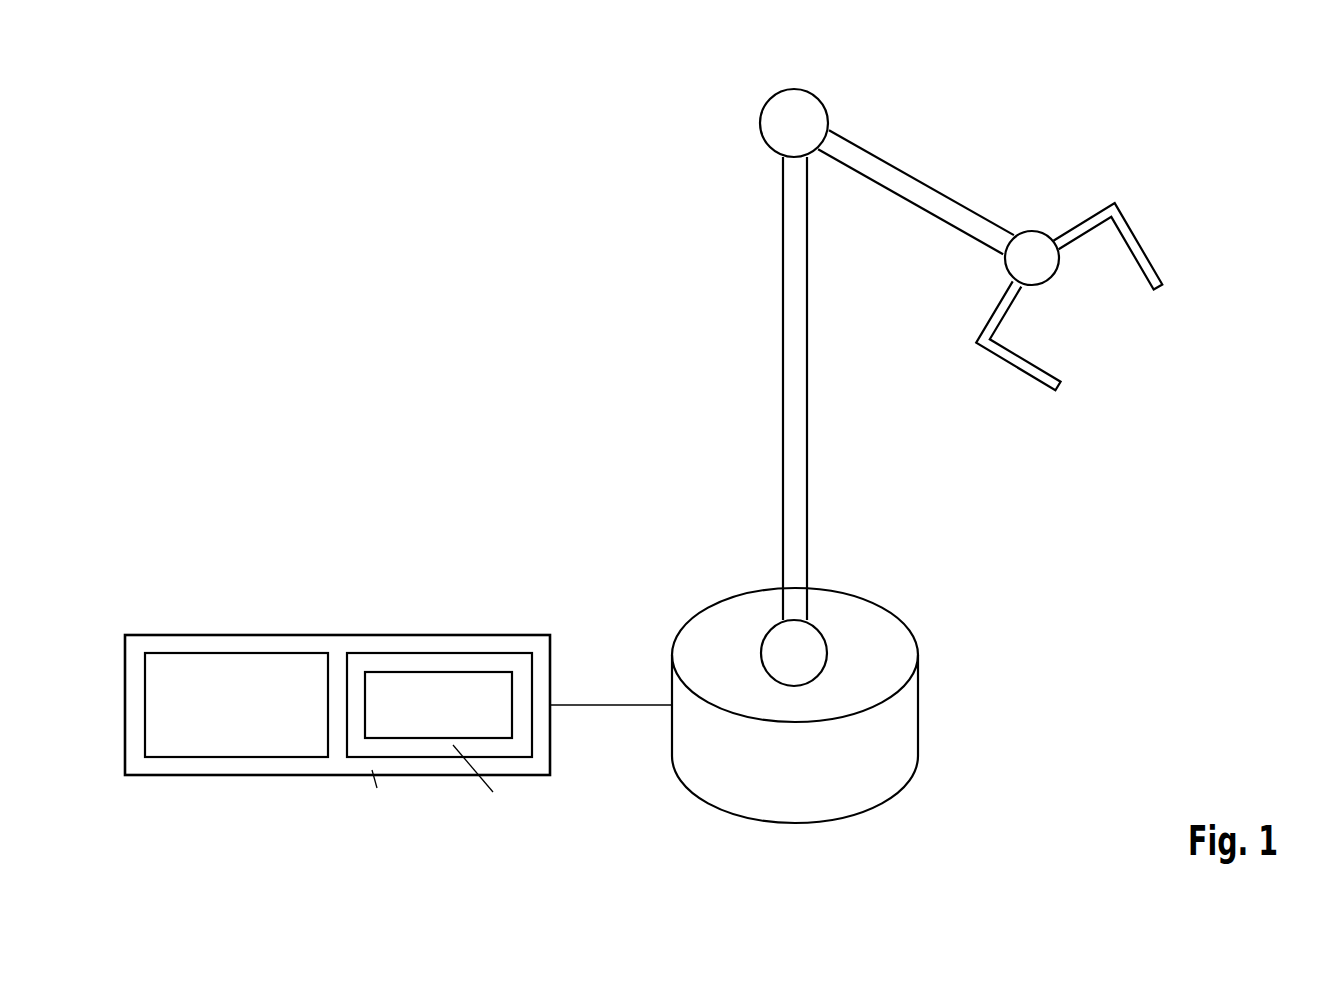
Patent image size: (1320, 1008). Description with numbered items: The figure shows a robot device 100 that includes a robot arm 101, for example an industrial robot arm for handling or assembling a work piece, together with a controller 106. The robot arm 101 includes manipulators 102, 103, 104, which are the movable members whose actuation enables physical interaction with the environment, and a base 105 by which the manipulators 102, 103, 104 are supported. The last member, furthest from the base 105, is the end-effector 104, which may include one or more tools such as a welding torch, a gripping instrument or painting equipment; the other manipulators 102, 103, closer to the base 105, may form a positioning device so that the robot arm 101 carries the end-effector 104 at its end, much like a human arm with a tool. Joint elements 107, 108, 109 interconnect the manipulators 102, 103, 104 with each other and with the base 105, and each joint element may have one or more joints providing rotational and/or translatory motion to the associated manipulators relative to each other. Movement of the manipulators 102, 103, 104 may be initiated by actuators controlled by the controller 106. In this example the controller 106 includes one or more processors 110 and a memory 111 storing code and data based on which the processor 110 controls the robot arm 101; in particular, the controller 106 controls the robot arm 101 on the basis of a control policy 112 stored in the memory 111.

The robot device 100 is at (962, 170).
The robot arm 101 is at (748, 318).
The manipulator 102 is at (792, 430).
The manipulator 103 is at (925, 190).
The end-effector 104 is at (1140, 245).
The base 105 is at (903, 722).
The controller 106 is at (338, 635).
The joint element 107 is at (778, 642).
The joint element 108 is at (765, 123).
The joint element 109 is at (1032, 240).
The processor 110 is at (258, 653).
The memory 111 is at (424, 653).
The control policy 112 is at (470, 672).